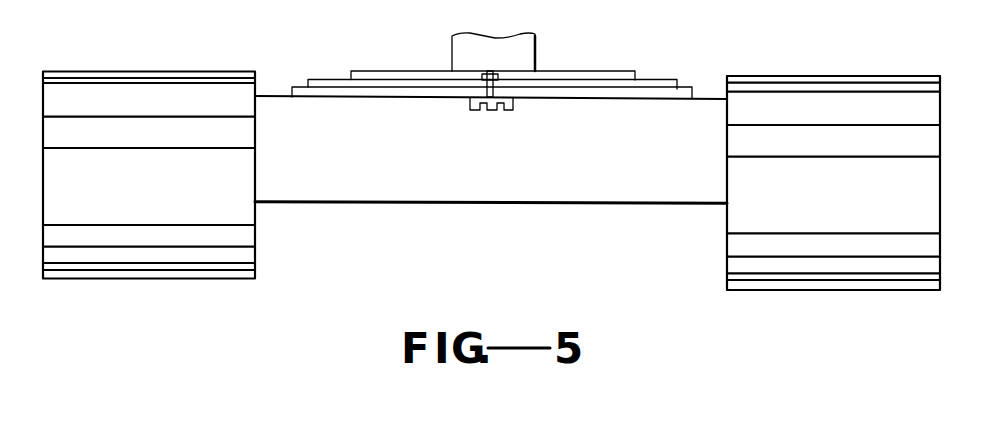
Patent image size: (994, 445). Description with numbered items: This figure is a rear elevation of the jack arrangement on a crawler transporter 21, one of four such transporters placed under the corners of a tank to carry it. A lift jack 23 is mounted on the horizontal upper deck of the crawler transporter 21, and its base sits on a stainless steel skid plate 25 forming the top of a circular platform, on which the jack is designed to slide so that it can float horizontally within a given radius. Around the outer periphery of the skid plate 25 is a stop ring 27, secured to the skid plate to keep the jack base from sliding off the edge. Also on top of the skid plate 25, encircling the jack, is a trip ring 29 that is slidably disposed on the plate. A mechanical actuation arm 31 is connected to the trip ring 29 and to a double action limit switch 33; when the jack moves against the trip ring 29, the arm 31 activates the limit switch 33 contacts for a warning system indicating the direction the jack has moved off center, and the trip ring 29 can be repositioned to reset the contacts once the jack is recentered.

The crawler transporter 21 is at (503, 256).
The lift jack 23 is at (537, 49).
The stainless steel skid plate 25 is at (687, 89).
The stop ring 27 is at (658, 80).
The trip ring 29 is at (613, 73).
The mechanical actuation arm 31 is at (497, 80).
The double action limit switch 33 is at (487, 82).